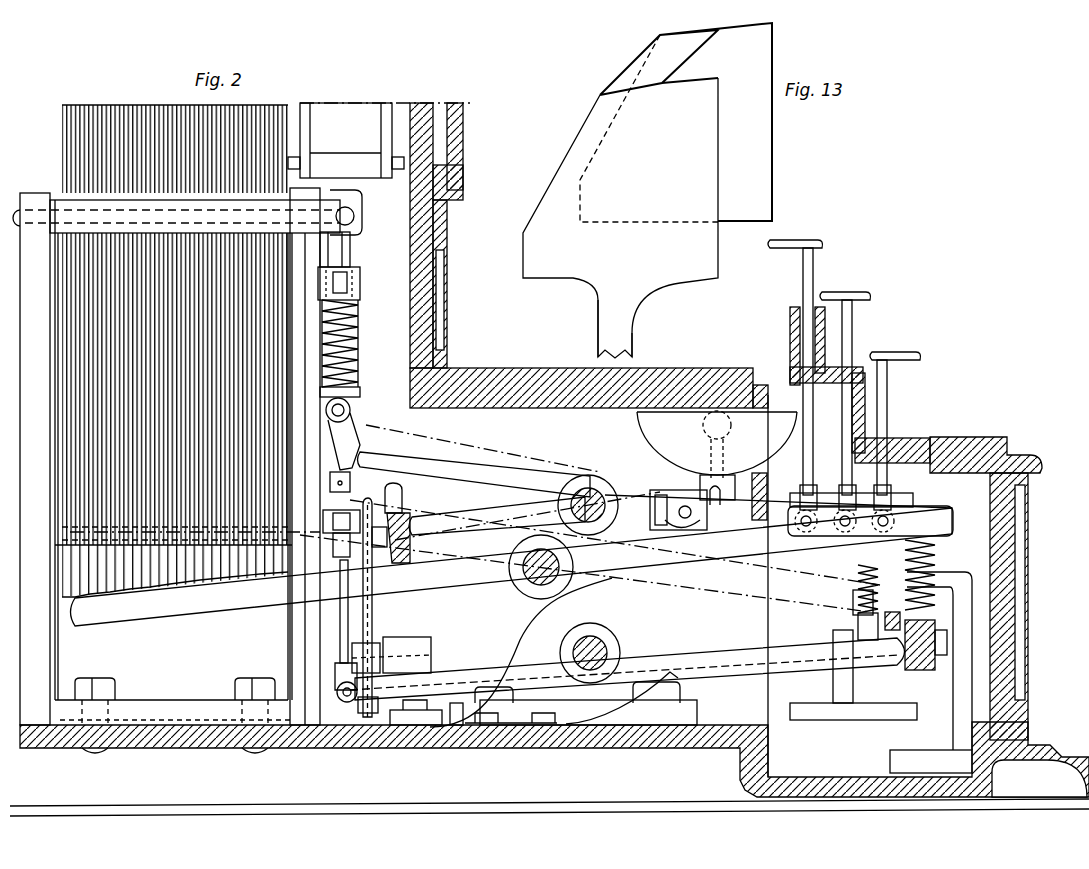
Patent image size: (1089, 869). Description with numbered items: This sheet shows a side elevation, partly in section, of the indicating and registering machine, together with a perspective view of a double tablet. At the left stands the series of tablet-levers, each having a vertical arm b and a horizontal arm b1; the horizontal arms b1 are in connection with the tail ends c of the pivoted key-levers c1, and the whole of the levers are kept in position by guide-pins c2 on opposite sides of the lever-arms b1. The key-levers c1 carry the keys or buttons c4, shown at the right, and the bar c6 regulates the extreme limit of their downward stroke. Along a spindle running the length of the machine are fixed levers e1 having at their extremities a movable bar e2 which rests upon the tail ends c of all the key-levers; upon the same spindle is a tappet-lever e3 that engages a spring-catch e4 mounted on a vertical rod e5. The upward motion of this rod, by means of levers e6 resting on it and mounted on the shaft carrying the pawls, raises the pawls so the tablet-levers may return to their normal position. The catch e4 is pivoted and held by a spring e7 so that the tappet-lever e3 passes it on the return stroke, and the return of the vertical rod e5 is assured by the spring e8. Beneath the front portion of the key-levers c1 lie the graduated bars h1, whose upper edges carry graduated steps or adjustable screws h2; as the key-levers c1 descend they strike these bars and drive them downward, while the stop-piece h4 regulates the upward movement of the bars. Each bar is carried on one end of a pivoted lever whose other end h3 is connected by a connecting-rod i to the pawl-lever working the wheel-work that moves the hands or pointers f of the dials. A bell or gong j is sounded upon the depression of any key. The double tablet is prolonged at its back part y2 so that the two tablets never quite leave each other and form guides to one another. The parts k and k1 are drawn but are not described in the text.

In FIG. 2, the tablet-lever vertical arm b is at (173, 351).
In FIG. 13, the tablet-lever vertical arm b is at (615, 328).
In FIG. 2, the tablet-lever horizontal arm b1 is at (175, 585).
In FIG. 2, the hands or pointers f is at (422, 118).
In FIG. 2, the levers e1 is at (527, 516).
In FIG. 2, the movable bar e2 is at (403, 515).
In FIG. 2, the tappet-lever e3 is at (479, 461).
In FIG. 2, the spring-catch e4 is at (350, 417).
In FIG. 2, the vertical rod e5 is at (350, 249).
In FIG. 2, the levers e6 is at (340, 203).
In FIG. 2, the spring e7 is at (333, 458).
In FIG. 2, the spring e8 is at (350, 335).
In FIG. 2, the tail ends of key-levers c is at (511, 563).
In FIG. 2, the key-levers c1 is at (755, 515).
In FIG. 2, the guide-pins c2 is at (708, 501).
In FIG. 2, the keys or buttons c4 is at (844, 367).
In FIG. 2, the bar c6 is at (876, 601).
In FIG. 2, the connecting-rod i is at (342, 630).
In FIG. 2, the bell or gong j is at (717, 445).
In FIG. 2, the lever k is at (627, 661).
In FIG. 2, the stop k1 is at (884, 620).
In FIG. 2, the graduated bars h1 is at (926, 645).
In FIG. 2, the graduated steps or adjustable screws h2 is at (865, 572).
In FIG. 2, the other end of lever h3 is at (543, 652).
In FIG. 2, the stop-piece h4 is at (947, 655).
In FIG. 13, the back part of tablets y2 is at (647, 190).